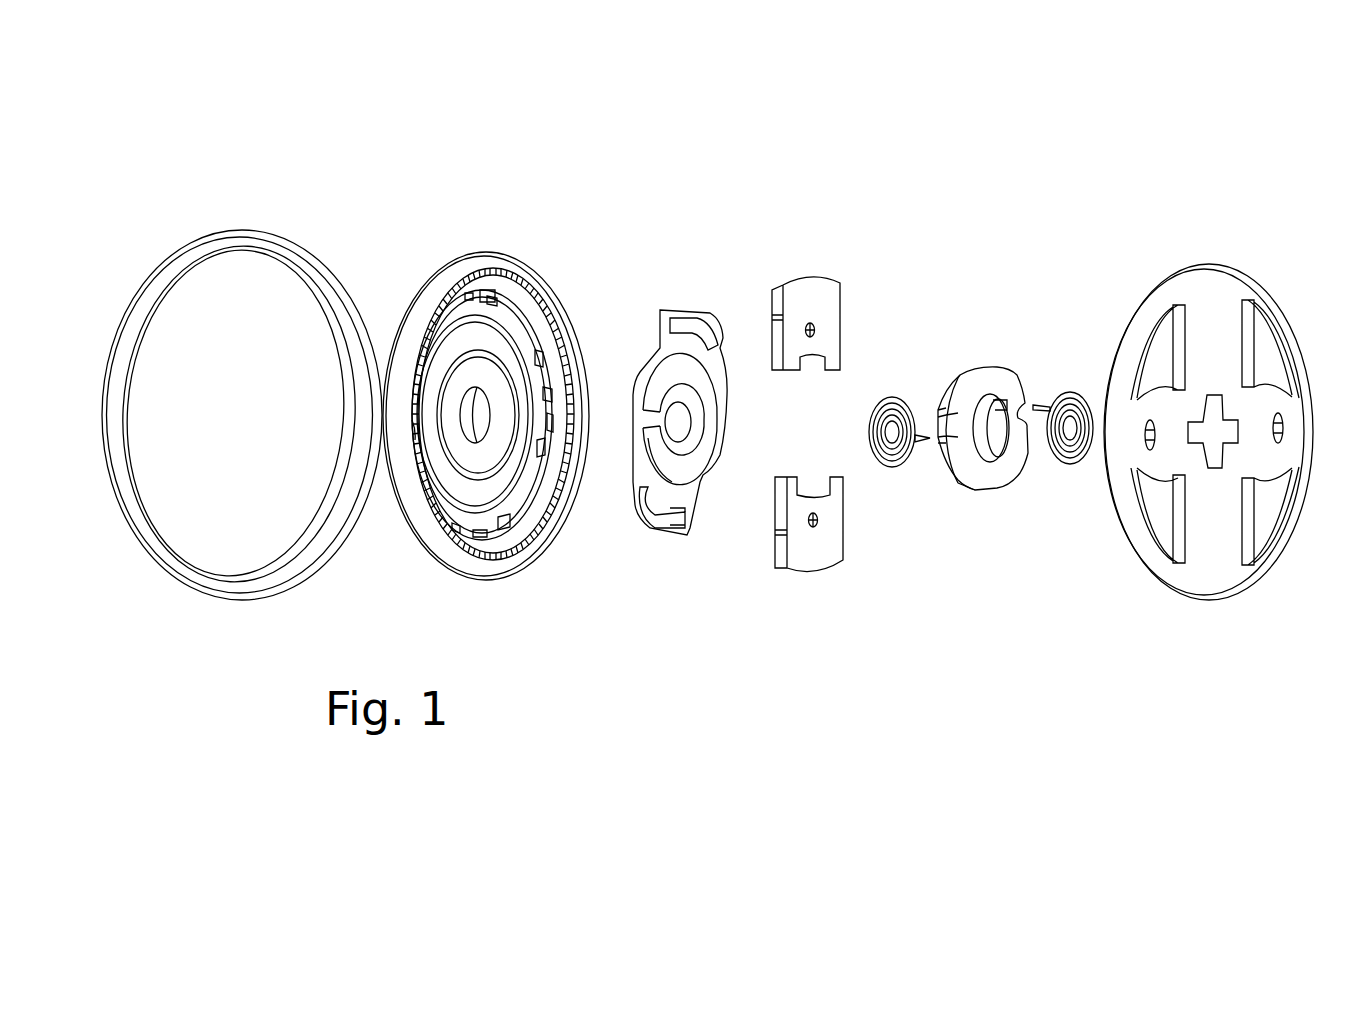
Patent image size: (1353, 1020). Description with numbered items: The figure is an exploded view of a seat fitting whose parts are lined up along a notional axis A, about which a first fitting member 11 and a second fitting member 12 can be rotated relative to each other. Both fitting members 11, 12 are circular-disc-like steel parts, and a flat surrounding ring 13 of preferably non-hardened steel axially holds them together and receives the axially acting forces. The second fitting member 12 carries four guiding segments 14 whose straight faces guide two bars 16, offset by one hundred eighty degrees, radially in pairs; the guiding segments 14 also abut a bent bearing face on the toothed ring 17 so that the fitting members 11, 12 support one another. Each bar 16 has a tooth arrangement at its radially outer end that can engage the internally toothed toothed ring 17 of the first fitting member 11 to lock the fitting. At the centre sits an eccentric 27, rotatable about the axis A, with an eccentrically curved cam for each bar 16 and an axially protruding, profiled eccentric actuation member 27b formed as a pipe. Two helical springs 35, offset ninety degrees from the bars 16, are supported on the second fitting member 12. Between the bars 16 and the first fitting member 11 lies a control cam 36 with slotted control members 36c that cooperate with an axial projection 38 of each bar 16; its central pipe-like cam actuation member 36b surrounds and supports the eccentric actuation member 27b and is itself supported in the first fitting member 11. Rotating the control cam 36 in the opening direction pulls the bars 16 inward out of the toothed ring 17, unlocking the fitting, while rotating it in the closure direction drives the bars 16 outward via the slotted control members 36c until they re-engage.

The surrounding ring 13 is at (285, 250).
The first fitting member 11 is at (498, 265).
The toothed ring 17 is at (552, 527).
The control cam 36 is at (701, 408).
The slotted control member 36c is at (686, 328).
The cam actuation member 36b is at (655, 440).
The bar 16 is at (800, 297).
The projection 38 is at (815, 328).
The spring 35 is at (910, 412).
The axis A is at (860, 425).
The eccentric 27 is at (978, 394).
The eccentric actuation member 27b is at (942, 440).
The second fitting member 12 is at (1211, 419).
The guiding segment 14 is at (1165, 355).